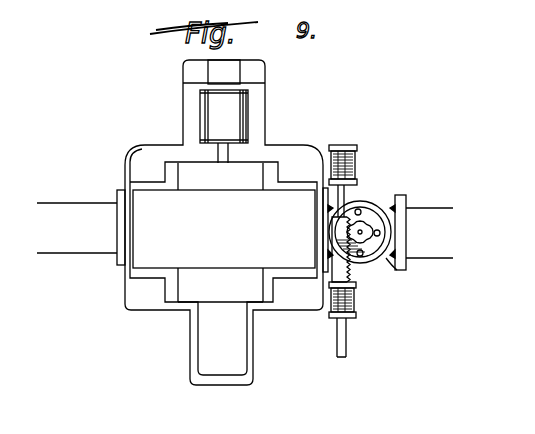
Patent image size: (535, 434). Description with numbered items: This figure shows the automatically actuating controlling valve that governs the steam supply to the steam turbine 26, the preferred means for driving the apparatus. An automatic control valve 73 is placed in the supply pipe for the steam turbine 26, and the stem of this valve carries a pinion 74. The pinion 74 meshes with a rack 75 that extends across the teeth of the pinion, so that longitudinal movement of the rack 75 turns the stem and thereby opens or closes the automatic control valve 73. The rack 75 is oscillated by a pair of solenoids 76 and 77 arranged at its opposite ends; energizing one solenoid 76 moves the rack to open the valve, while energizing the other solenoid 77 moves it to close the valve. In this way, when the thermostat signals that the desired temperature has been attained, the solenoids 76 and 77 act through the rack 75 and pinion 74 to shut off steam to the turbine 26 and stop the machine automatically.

The steam turbine 26 is at (151, 251).
The automatic control valve 73 is at (380, 197).
The pinion 74 is at (352, 269).
The rack 75 is at (350, 273).
The solenoid 76 is at (356, 300).
The solenoid 77 is at (356, 165).